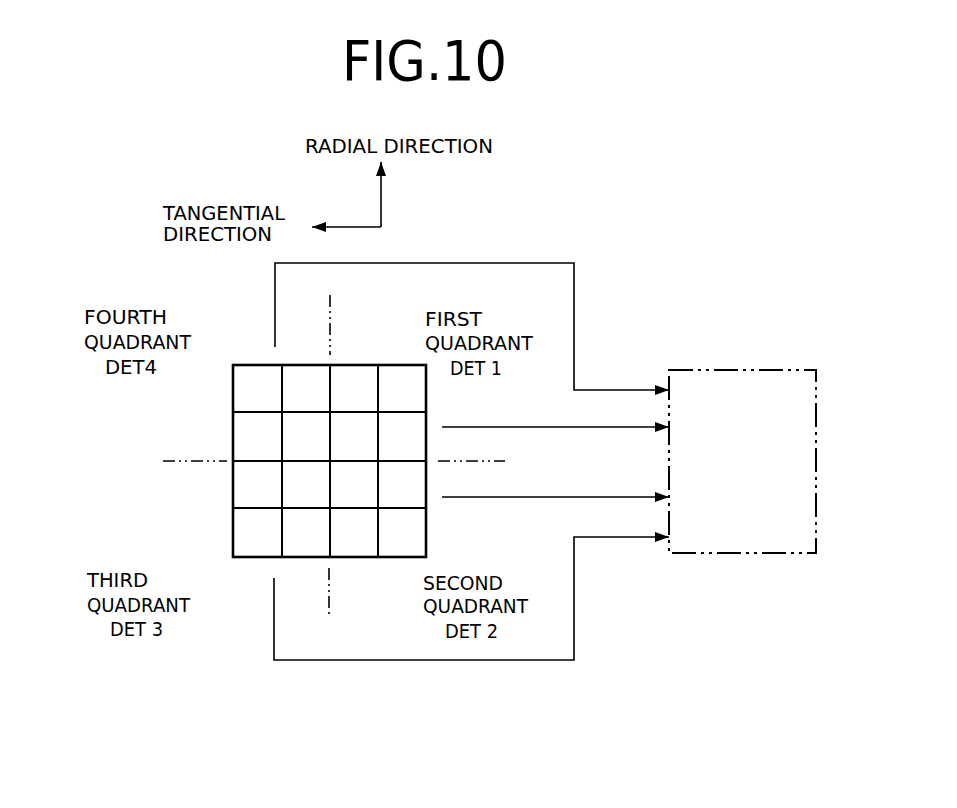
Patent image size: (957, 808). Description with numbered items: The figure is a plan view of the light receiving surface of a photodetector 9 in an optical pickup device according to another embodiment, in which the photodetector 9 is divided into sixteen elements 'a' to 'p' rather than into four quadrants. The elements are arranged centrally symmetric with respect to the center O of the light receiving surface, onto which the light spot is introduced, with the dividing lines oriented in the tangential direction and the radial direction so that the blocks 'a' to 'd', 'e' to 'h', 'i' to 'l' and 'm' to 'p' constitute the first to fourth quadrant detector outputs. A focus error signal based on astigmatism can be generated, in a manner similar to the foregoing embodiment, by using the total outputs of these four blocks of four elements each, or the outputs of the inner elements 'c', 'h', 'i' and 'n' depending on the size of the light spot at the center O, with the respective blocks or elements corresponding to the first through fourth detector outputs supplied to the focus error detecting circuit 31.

The photodetector 9 is at (350, 348).
The focus error detecting circuit 31 is at (753, 370).
The center of the light receiving surface O is at (330, 461).